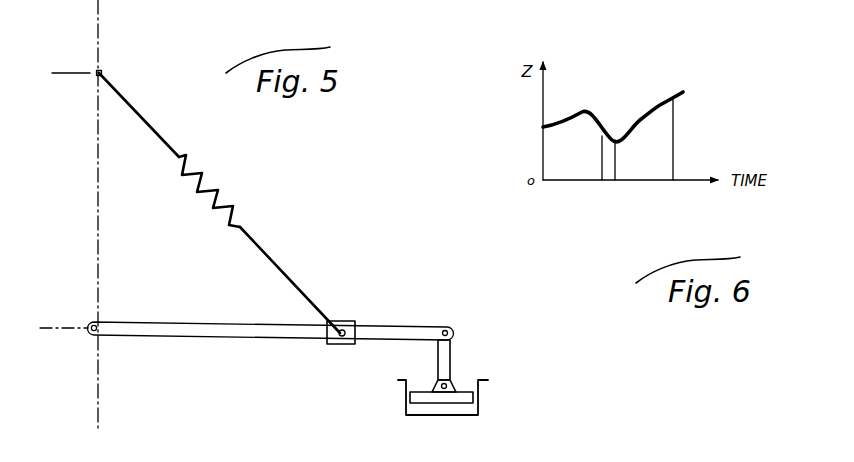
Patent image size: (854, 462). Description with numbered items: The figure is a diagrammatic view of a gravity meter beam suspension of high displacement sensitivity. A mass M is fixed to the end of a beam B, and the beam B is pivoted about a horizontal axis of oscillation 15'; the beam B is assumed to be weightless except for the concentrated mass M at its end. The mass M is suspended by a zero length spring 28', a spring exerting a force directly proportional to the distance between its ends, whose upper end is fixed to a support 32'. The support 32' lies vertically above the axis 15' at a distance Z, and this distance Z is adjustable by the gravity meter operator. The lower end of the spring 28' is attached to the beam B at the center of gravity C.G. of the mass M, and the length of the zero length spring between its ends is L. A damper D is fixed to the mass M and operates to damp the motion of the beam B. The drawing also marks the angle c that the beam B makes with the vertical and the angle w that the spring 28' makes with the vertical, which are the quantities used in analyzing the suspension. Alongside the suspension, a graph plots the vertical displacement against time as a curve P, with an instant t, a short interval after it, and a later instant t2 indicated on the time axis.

In FIG. 5, the support 32' is at (76, 48).
In FIG. 5, the zero length spring 28' is at (219, 203).
In FIG. 5, the horizontal axis of oscillation 15' is at (67, 359).
In FIG. 5, the beam B is at (243, 322).
In FIG. 5, the length of the zero length spring L is at (99, 73).
In FIG. 5, the mass M is at (350, 345).
In FIG. 5, the center of gravity of the mass C.G. is at (338, 336).
In FIG. 5, the damper D is at (480, 398).
In FIG. 5, the distance from the axis of oscillation to the support Z is at (71, 78).
In FIG. 5, the angle c is at (158, 336).
In FIG. 5, the angle w is at (135, 117).
In FIG. 6, the curve P (Z vs time) P is at (591, 113).
In FIG. 6, the time t and t+Δ t is at (602, 182).
In FIG. 6, the time t2 is at (673, 182).